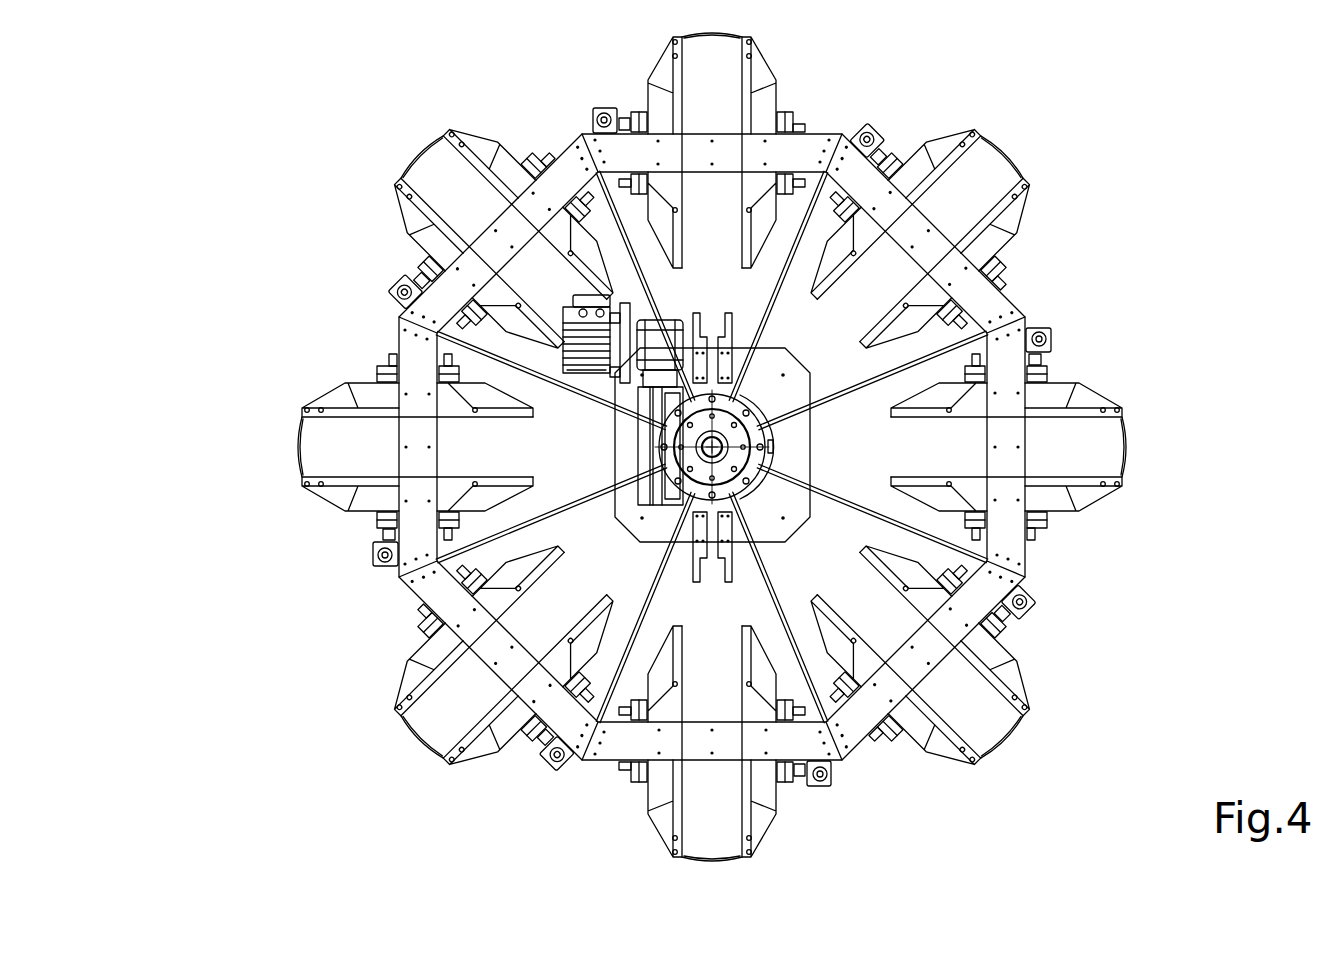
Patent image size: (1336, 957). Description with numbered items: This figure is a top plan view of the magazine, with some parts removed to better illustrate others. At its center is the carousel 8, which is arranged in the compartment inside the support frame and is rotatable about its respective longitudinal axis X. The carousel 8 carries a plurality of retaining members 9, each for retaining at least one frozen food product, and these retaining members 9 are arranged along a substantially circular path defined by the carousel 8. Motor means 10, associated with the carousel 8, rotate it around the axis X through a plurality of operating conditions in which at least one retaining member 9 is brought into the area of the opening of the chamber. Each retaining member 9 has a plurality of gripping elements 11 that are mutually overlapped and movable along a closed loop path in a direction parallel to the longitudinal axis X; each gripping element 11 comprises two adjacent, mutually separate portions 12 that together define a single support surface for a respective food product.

The carousel 8 is at (556, 106).
The retaining member 9 is at (783, 73).
The motor means 10 is at (588, 378).
The gripping element 11 is at (514, 758).
The portion 12 is at (347, 407).
The longitudinal axis X is at (723, 437).